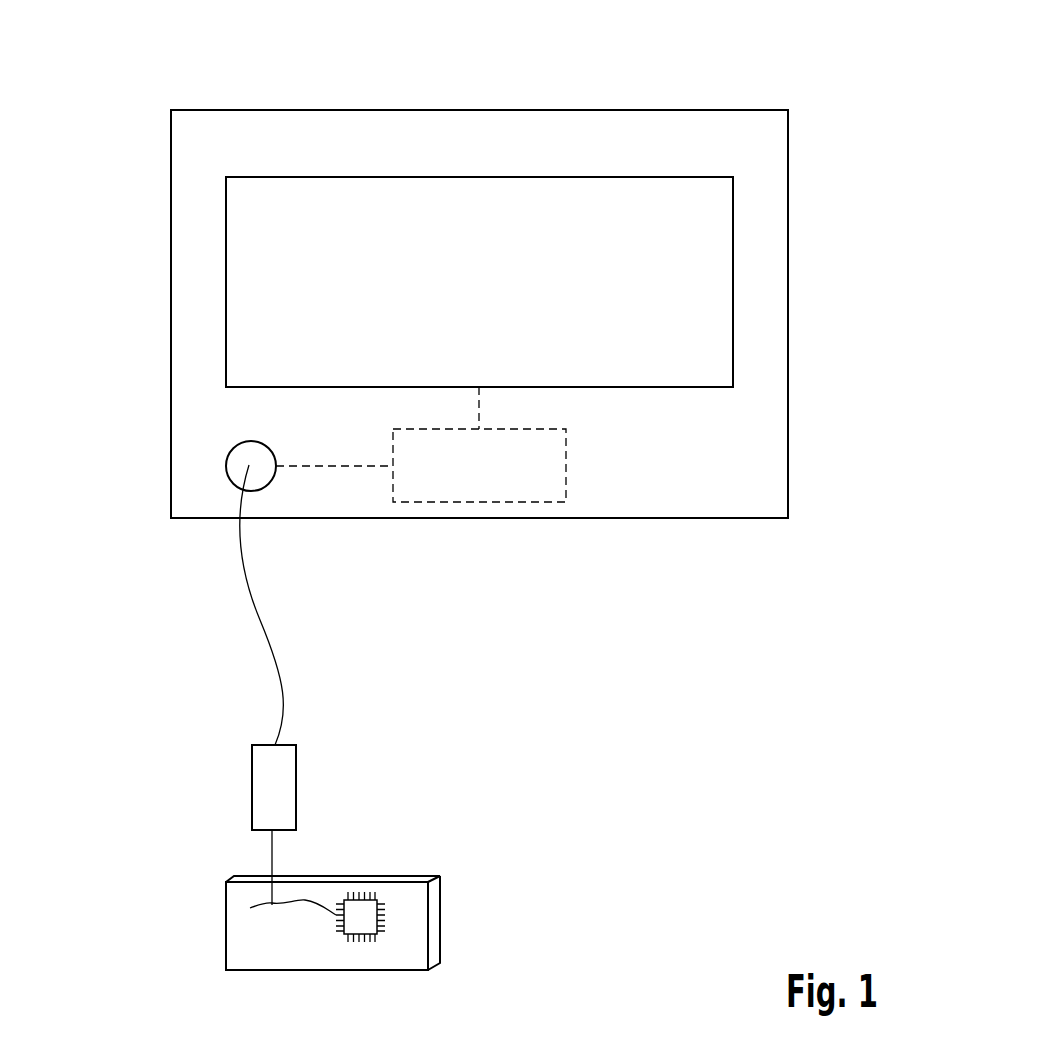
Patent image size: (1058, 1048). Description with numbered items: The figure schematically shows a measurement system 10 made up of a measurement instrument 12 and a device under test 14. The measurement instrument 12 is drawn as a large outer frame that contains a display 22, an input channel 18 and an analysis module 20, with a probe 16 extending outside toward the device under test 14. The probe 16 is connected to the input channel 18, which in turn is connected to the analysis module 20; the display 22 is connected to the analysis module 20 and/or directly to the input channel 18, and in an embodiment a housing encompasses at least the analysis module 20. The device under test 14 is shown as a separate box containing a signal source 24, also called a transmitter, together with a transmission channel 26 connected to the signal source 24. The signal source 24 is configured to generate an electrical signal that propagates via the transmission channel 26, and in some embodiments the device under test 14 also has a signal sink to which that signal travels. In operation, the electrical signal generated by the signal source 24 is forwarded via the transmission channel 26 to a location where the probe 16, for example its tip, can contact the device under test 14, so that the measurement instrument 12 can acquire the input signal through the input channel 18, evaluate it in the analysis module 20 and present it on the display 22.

The measurement system 10 is at (719, 90).
The measurement instrument 12 is at (133, 327).
The device under test 14 is at (413, 866).
The probe 16 is at (296, 800).
The input channel 18 is at (226, 466).
The analysis module 20 is at (493, 502).
The display 22 is at (226, 257).
The signal source 24 is at (362, 915).
The transmission channel 26 is at (313, 900).